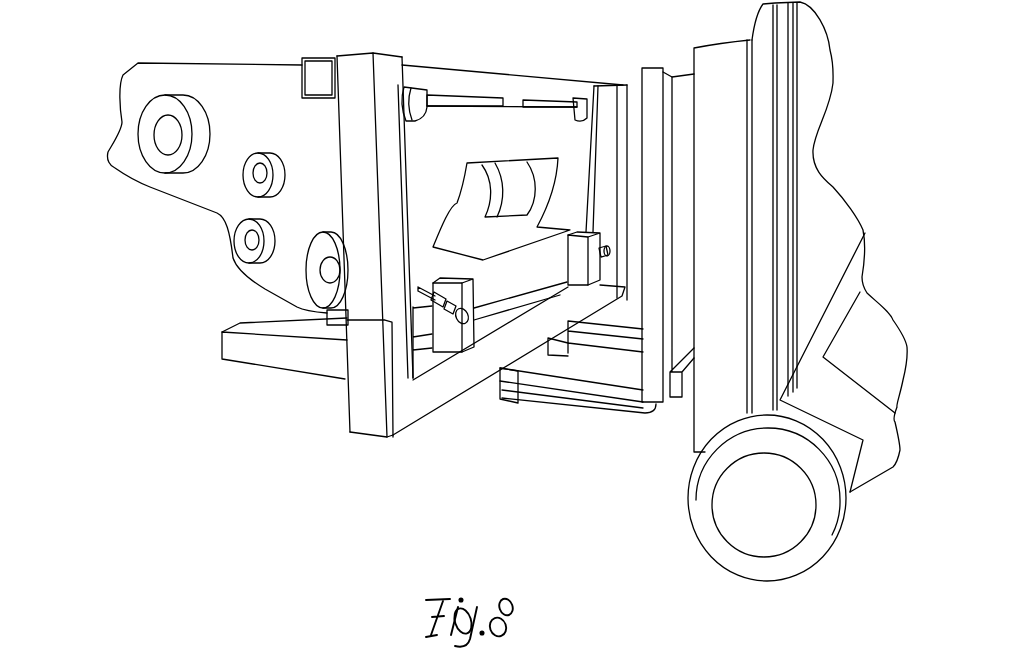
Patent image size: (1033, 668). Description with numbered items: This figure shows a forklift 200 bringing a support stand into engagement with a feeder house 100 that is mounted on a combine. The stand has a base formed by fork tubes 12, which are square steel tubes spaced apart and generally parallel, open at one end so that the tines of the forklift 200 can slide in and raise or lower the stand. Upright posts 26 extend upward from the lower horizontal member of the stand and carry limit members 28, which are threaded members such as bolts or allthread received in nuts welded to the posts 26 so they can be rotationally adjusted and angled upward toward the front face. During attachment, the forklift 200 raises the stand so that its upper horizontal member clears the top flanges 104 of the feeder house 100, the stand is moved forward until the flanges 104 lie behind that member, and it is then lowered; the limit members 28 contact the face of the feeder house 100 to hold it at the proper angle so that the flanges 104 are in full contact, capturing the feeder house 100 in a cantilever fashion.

The feeder house 100 is at (138, 87).
The top flange 104 is at (452, 97).
The fork tube 12 is at (252, 328).
The upright post 26 is at (468, 292).
The limit member 28 is at (445, 298).
The forklift 200 is at (872, 327).